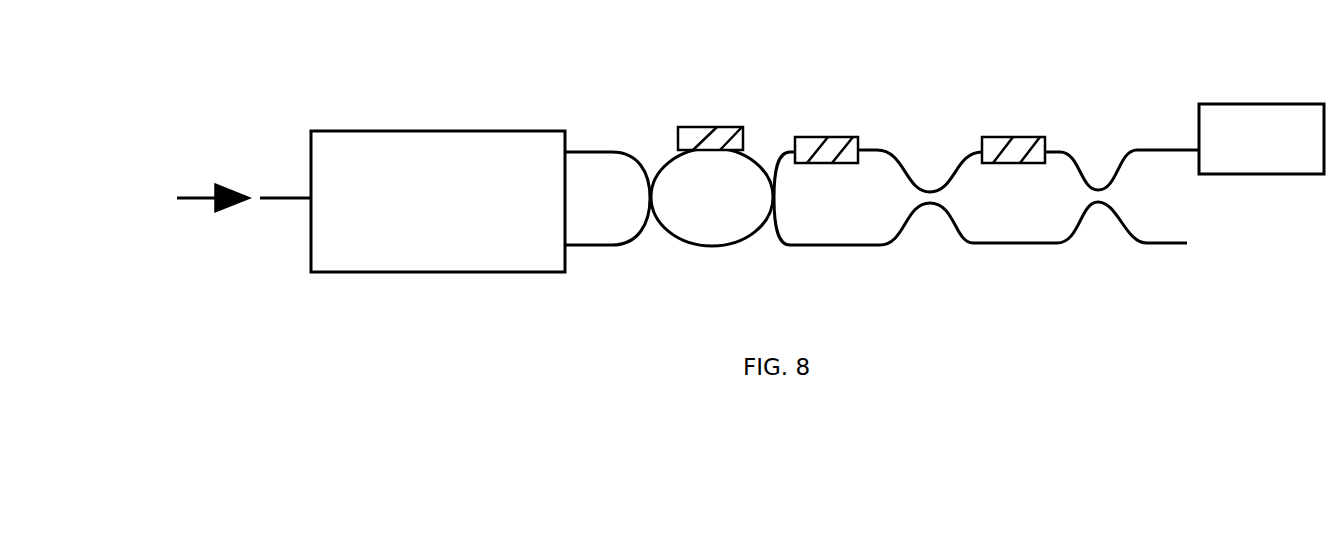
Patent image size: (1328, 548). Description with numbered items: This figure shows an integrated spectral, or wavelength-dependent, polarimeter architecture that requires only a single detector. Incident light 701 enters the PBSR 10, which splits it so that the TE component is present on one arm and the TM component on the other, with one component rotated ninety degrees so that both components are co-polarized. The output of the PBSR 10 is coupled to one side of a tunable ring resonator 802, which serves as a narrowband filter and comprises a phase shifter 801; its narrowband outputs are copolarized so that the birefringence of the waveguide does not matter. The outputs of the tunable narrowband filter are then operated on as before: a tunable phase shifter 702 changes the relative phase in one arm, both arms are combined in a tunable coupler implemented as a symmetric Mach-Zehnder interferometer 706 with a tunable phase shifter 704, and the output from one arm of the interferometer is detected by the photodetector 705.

The incident light 701 is at (152, 197).
The PBSR 10 is at (349, 257).
The phase shifter 801 is at (685, 122).
The tunable ring resonator 802 is at (675, 255).
The tunable phase shifter 702 is at (813, 128).
The tunable phase shifter 704 is at (990, 117).
The symmetric Mach-Zehnder interferometer 706 is at (1120, 273).
The photodetector 705 is at (1252, 83).